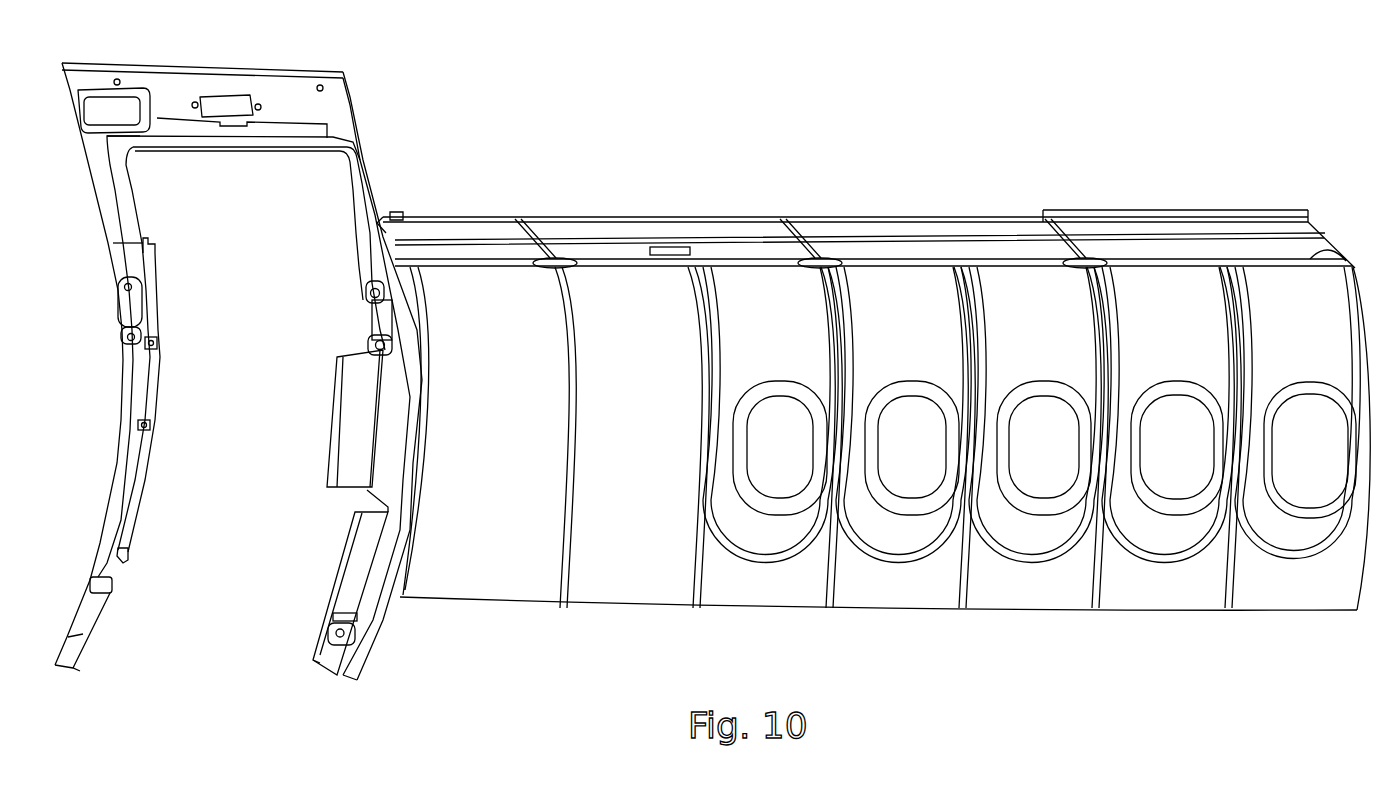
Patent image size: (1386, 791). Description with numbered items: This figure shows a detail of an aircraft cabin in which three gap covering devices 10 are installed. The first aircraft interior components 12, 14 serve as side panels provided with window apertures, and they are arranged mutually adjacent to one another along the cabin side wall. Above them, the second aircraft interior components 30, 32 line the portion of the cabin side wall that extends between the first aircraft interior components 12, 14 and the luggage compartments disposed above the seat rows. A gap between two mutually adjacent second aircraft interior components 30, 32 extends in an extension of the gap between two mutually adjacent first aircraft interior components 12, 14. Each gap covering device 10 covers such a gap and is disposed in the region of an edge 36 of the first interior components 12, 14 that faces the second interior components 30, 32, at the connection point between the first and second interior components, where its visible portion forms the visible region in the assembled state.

The gap covering device 10 is at (552, 265).
The first aircraft interior component 12 is at (1023, 593).
The first aircraft interior component 14 is at (1157, 595).
The second aircraft interior component 30 is at (915, 247).
The second aircraft interior component 32 is at (1142, 243).
The edge 36 is at (1327, 250).